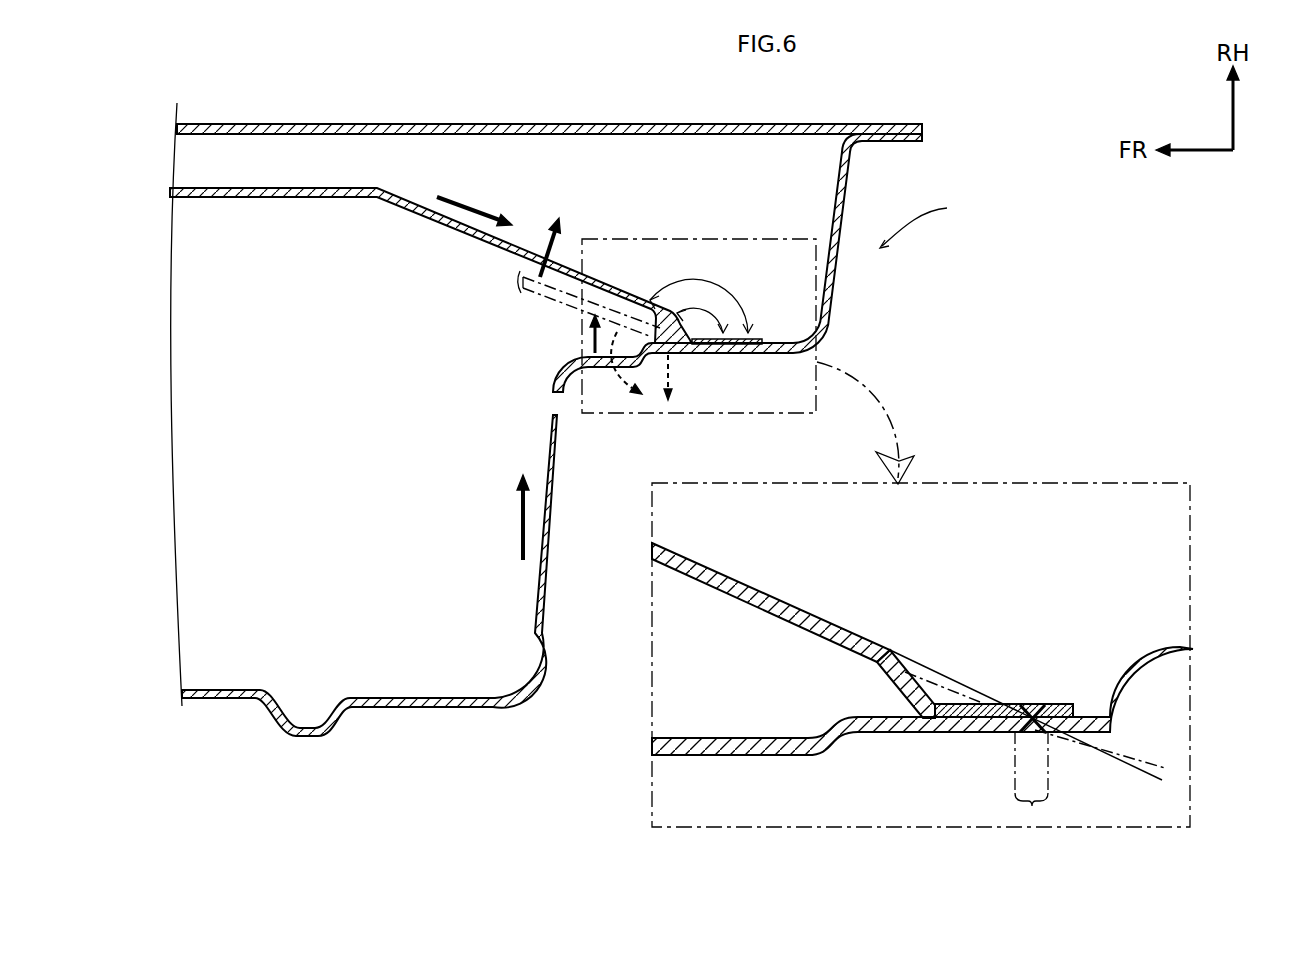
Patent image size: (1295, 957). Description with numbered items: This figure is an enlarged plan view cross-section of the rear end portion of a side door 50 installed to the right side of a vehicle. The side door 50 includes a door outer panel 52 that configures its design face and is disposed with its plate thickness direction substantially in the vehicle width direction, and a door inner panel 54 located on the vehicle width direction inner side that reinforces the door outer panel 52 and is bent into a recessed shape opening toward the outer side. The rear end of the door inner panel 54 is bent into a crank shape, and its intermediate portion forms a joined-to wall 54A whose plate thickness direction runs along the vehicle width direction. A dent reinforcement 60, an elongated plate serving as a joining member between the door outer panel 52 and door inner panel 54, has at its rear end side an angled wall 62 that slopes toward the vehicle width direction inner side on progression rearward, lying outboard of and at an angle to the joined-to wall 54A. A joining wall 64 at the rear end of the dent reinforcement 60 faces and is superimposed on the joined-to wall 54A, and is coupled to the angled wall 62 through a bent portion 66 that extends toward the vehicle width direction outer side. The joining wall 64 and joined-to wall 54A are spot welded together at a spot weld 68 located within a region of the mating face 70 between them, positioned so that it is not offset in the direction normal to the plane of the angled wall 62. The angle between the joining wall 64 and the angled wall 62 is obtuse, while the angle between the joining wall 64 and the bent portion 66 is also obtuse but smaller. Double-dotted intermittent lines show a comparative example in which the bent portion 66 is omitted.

The side door 50 is at (549, 80).
The door outer panel 52 is at (531, 124).
The door inner panel 54 is at (447, 710).
The joined-to wall 54A is at (760, 348).
The dent reinforcement 60 is at (238, 204).
The angled wall 62 is at (410, 213).
The joining wall 64 is at (763, 332).
The bent portion 66 is at (667, 333).
The spot weld 68 is at (1022, 702).
The mating face 70 is at (1069, 702).